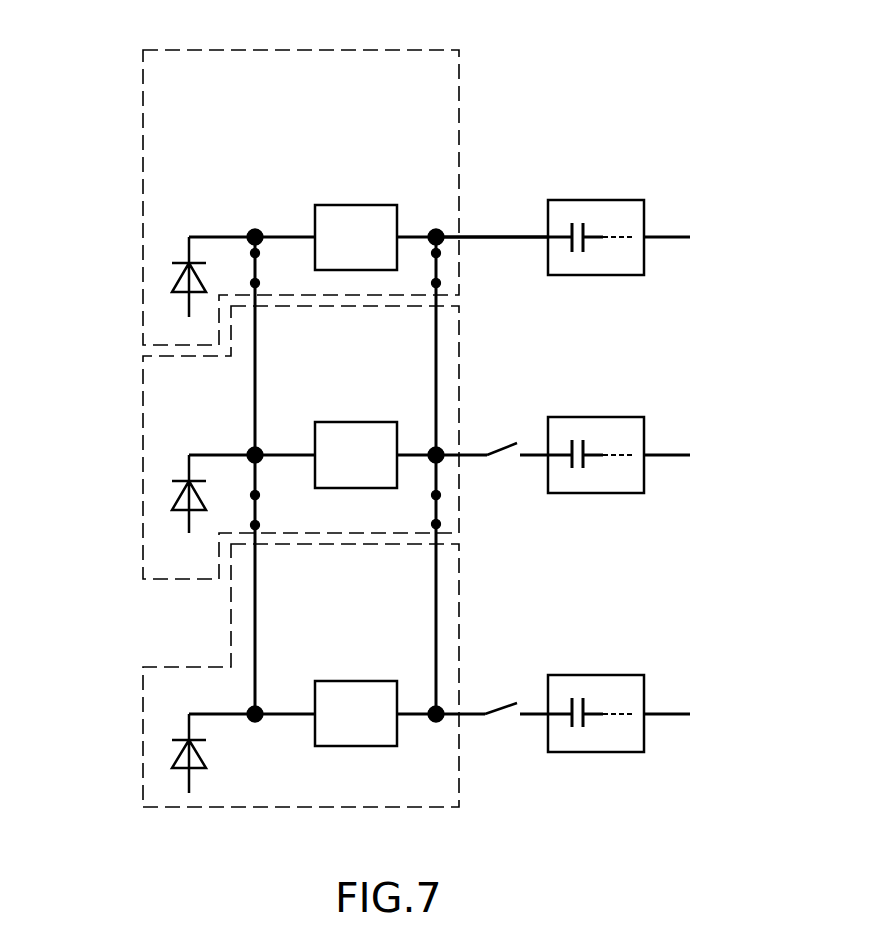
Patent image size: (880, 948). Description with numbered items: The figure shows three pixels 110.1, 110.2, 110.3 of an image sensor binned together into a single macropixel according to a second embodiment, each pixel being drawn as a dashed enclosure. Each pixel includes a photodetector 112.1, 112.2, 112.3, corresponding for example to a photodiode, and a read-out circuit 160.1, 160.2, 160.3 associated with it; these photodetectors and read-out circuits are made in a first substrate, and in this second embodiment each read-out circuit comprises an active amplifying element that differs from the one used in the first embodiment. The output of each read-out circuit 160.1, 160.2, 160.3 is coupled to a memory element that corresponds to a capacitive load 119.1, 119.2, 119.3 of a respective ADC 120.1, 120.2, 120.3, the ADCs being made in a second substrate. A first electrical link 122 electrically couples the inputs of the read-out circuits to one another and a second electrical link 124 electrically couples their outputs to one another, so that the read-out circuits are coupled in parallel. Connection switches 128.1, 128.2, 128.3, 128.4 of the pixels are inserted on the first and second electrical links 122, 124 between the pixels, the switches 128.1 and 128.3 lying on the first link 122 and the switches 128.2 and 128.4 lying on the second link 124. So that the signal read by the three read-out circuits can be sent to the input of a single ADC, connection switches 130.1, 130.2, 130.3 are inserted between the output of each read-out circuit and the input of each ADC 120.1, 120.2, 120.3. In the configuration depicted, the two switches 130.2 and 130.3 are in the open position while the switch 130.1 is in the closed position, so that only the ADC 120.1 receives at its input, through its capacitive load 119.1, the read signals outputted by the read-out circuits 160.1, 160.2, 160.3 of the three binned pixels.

The pixel 110.1 is at (459, 62).
The pixel 110.2 is at (459, 385).
The pixel 110.3 is at (459, 623).
The photodetector 112.1 is at (173, 282).
The photodetector 112.2 is at (173, 502).
The photodetector 112.3 is at (173, 762).
The read-out circuit 160.1 is at (370, 205).
The read-out circuit 160.2 is at (370, 422).
The read-out circuit 160.3 is at (370, 681).
The ADC 120.1 is at (644, 255).
The ADC 120.2 is at (644, 474).
The ADC 120.3 is at (644, 733).
The capacitive load 119.1 is at (587, 243).
The capacitive load 119.2 is at (587, 463).
The capacitive load 119.3 is at (587, 722).
The connection switch 130.1 is at (498, 237).
The connection switch 130.2 is at (507, 443).
The connection switch 130.3 is at (500, 710).
The connection switch 128.1 is at (250, 268).
The connection switch 128.2 is at (436, 267).
The connection switch 128.3 is at (255, 512).
The connection switch 128.4 is at (436, 507).
The first electrical link 122 is at (255, 437).
The second electrical link 124 is at (436, 313).